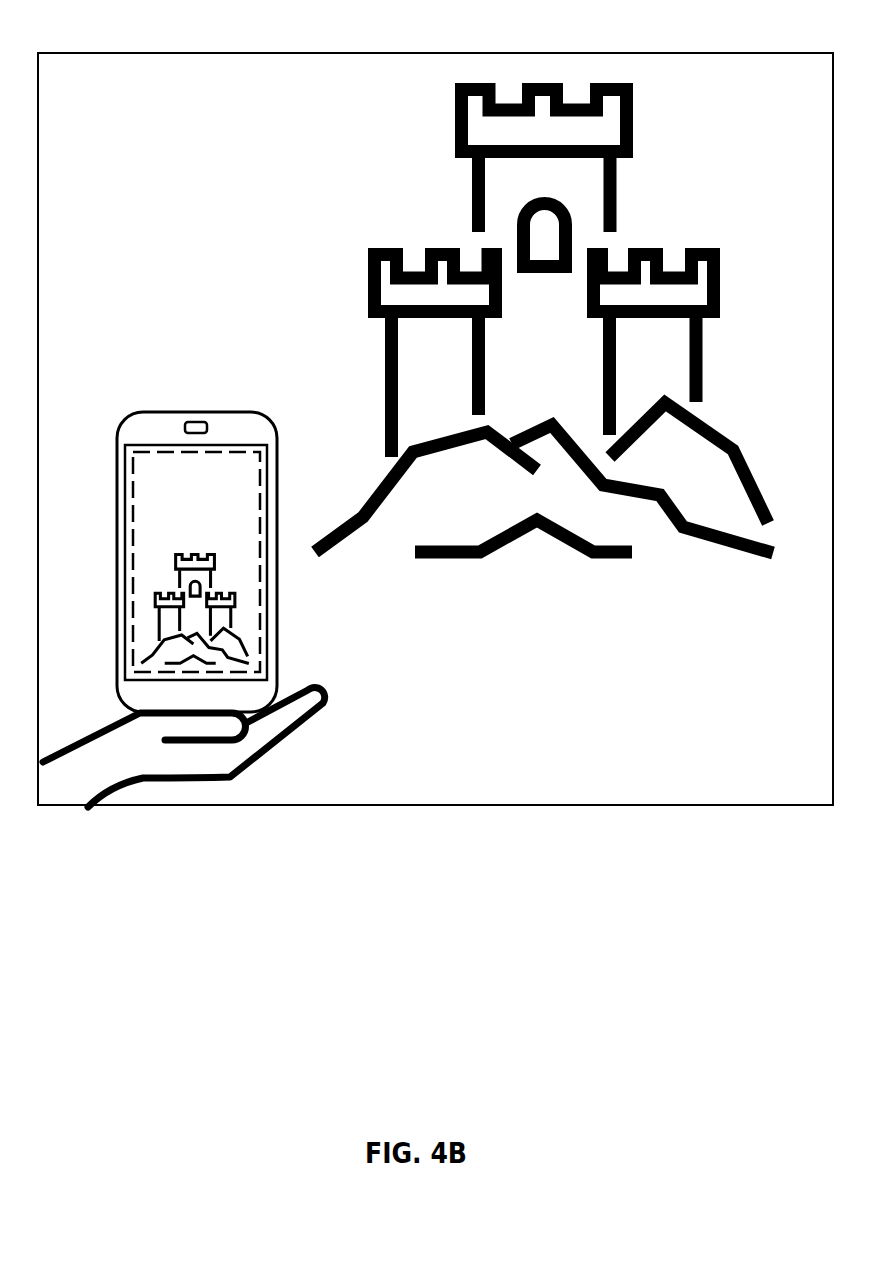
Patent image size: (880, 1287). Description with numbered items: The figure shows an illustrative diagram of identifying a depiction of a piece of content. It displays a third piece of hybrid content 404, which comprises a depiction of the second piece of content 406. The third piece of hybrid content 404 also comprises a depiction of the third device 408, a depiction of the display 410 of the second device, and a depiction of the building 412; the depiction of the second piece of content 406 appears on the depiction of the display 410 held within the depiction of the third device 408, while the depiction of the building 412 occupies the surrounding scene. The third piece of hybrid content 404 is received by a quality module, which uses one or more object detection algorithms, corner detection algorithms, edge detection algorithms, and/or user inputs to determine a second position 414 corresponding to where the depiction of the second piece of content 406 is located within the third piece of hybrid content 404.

The third piece of hybrid content 404 is at (418, 52).
The depiction of the building 412 is at (703, 247).
The depiction of the third device 408 is at (270, 420).
The depiction of the display 410 is at (268, 492).
The second position 414 is at (135, 527).
The depiction of the second piece of content 406 is at (218, 562).